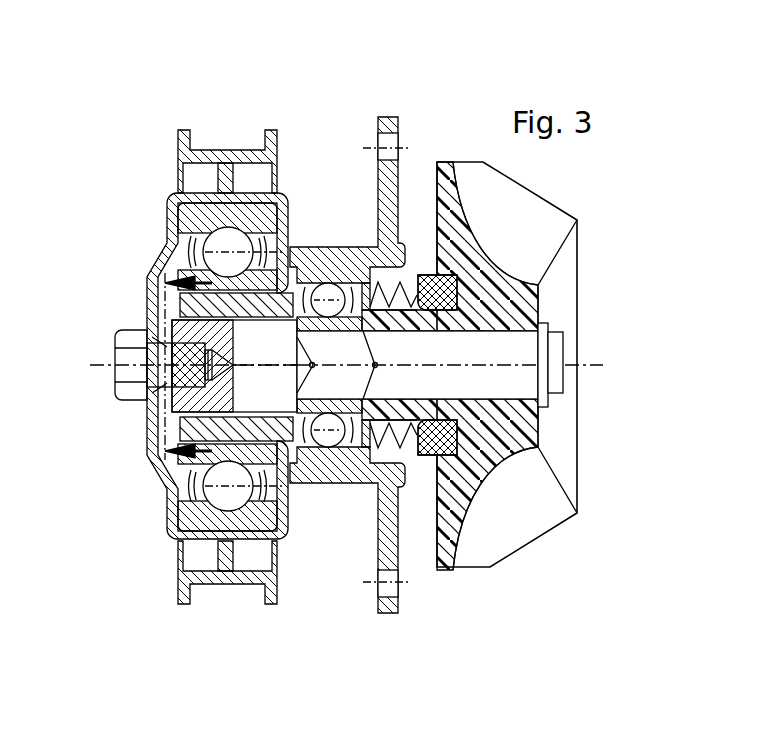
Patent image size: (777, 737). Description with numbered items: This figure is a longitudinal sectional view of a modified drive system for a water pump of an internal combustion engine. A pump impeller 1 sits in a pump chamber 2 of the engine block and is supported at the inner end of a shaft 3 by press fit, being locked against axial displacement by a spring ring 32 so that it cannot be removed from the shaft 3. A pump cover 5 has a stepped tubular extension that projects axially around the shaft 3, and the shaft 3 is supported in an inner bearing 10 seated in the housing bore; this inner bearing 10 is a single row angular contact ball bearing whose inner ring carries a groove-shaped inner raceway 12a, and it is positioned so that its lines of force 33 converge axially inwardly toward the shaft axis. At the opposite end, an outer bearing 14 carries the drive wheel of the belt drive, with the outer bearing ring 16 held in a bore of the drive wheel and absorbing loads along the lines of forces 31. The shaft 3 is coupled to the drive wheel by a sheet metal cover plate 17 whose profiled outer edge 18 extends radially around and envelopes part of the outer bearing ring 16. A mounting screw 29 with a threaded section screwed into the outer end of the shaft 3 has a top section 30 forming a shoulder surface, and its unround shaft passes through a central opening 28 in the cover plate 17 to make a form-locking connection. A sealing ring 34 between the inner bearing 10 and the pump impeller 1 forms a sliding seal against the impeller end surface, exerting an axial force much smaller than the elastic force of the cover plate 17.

The pump impeller 1 is at (560, 523).
The pump chamber 2 is at (422, 207).
The shaft 3 is at (527, 345).
The pump cover 5 is at (400, 500).
The inner bearing 10 is at (330, 437).
The inner raceway 12a is at (320, 308).
The outer bearing 14 is at (220, 237).
The outer bearing ring 16 is at (257, 220).
The cover plate 17 is at (168, 192).
The profiled outer edge 18 is at (222, 577).
The central opening 28 is at (148, 378).
The mounting screw 29 is at (157, 347).
The top section 30 is at (133, 392).
The lines of forces 31 is at (243, 577).
The spring ring 32 is at (560, 400).
The lines of force 33 is at (480, 250).
The sealing ring 34 is at (440, 440).